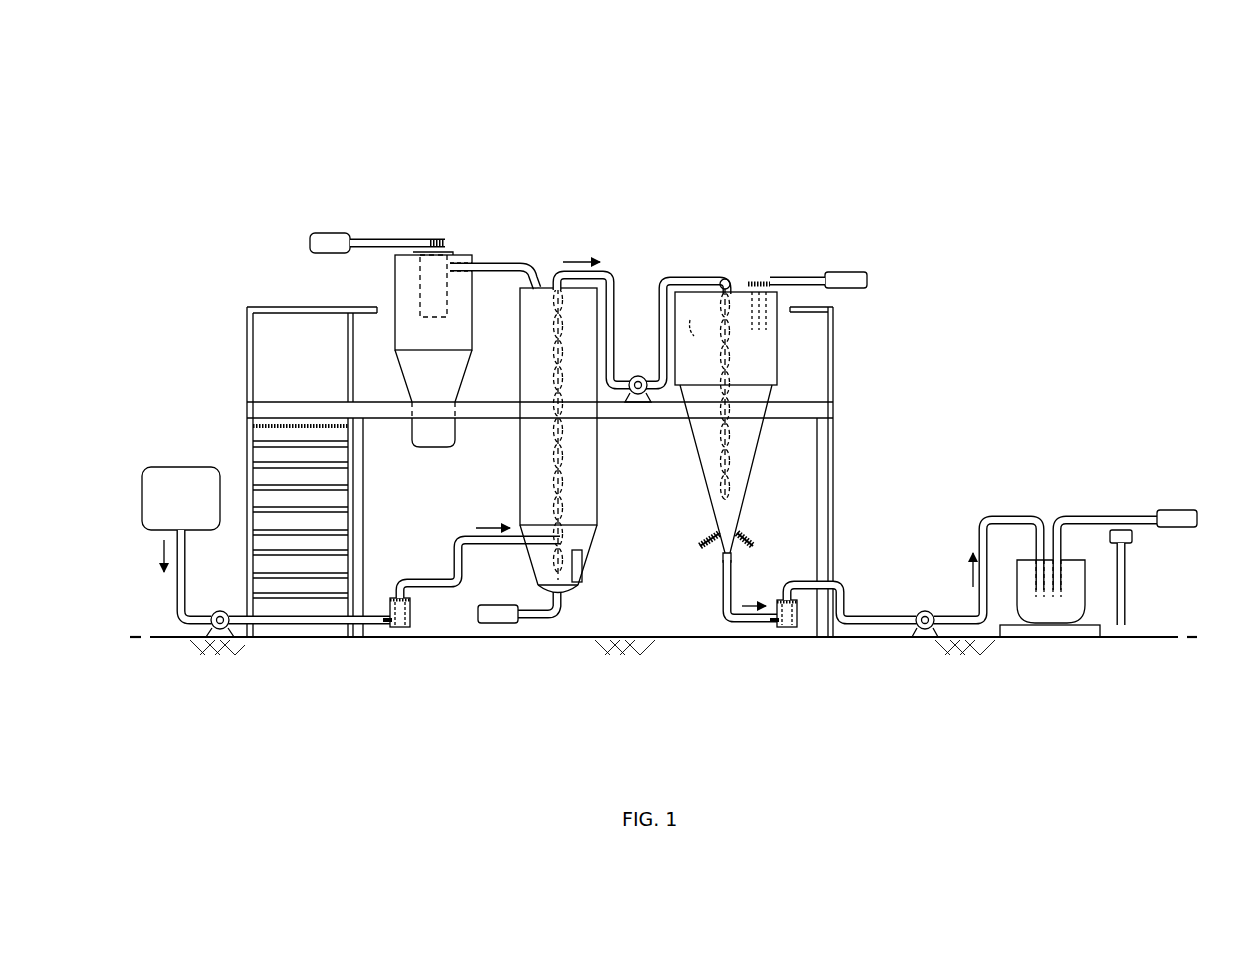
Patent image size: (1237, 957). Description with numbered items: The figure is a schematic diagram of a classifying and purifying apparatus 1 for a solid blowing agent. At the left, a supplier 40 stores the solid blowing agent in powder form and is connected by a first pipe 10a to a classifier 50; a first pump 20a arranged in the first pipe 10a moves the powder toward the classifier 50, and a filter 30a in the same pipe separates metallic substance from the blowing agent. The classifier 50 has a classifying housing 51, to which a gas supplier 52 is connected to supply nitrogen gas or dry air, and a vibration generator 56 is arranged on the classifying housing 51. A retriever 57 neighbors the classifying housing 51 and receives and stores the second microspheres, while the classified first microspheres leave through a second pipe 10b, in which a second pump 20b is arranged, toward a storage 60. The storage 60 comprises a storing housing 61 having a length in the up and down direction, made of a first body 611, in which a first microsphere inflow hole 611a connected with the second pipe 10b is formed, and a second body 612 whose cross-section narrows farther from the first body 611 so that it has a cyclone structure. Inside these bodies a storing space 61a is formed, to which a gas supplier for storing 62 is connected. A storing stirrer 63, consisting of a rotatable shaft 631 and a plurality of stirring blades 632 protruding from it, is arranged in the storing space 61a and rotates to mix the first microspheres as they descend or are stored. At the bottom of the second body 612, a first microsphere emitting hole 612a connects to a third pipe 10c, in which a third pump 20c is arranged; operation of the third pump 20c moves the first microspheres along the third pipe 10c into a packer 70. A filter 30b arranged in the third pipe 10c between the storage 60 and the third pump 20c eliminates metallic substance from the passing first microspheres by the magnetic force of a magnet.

The classifying and purifying apparatus 1 is at (948, 168).
The supplier 40 is at (176, 462).
The first pump 20a is at (222, 611).
The filter 30a is at (408, 632).
The first pipe 10a is at (426, 583).
The gas supplier 52 is at (497, 607).
The retriever 57 is at (459, 257).
The classifier 50 is at (545, 268).
The classifying housing 51 is at (587, 437).
The vibration generator 56 is at (580, 563).
The second pipe 10b is at (610, 304).
The second pump 20b is at (637, 376).
The storage 60 is at (740, 283).
The storing housing 61 is at (819, 427).
The first body 611 is at (780, 344).
The second body 612 is at (792, 473).
The storing space 61a is at (690, 320).
The first microsphere inflow hole 611a is at (718, 292).
The gas supplier for storing 62 is at (843, 274).
The storing stirrer 63 is at (630, 483).
The shaft 631 is at (720, 446).
The stirring blades 632 is at (725, 497).
The first microsphere emitting hole 612a is at (722, 560).
The filter 30b is at (790, 634).
The third pipe 10c is at (866, 618).
The third pump 20c is at (925, 611).
The packer 70 is at (1050, 630).